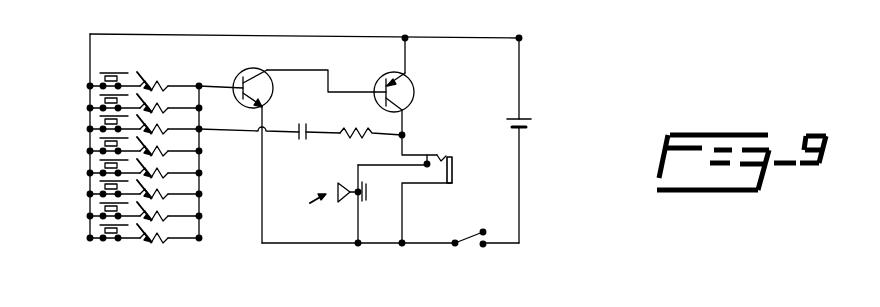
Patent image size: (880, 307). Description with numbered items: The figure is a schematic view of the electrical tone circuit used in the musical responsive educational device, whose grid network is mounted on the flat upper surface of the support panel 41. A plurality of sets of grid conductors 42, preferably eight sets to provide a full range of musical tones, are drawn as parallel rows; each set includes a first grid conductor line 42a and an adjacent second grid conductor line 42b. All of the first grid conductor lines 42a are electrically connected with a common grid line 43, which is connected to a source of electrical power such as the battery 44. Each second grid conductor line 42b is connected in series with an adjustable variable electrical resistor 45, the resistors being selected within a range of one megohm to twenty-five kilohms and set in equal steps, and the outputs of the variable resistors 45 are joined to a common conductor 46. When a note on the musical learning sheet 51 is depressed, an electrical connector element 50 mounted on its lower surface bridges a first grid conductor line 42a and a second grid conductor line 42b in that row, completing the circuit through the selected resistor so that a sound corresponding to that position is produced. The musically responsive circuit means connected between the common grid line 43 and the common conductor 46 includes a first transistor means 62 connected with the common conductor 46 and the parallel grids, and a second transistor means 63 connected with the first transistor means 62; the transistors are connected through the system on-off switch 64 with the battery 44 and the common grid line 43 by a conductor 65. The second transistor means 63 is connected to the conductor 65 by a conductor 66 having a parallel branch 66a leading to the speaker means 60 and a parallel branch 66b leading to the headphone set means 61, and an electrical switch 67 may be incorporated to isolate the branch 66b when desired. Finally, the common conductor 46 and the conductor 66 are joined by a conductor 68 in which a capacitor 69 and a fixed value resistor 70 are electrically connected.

The support panel 41 is at (567, 8).
The sets of grid conductors 42 is at (121, 166).
The first grid conductor line 42a is at (120, 66).
The second grid conductor line 42b is at (129, 242).
The common grid line 43 is at (178, 34).
The battery 44 is at (524, 117).
The adjustable variable electrical resistor 45 is at (163, 82).
The common conductor 46 is at (199, 149).
The electrical connector element 50 is at (122, 60).
The musical learning sheet 51 is at (100, 73).
The speaker means 60 is at (339, 180).
The headphone set means 61 is at (453, 175).
The first transistor means 62 is at (257, 62).
The second transistor means 63 is at (386, 68).
The on-off switch 64 is at (467, 248).
The conductor 65 is at (327, 245).
The conductor 66 is at (398, 181).
The parallel branch 66a is at (357, 216).
The parallel branch 66b is at (402, 216).
The electrical switch 67 is at (439, 154).
The conductor 68 is at (239, 136).
The capacitor 69 is at (298, 125).
The fixed value resistor 70 is at (353, 113).